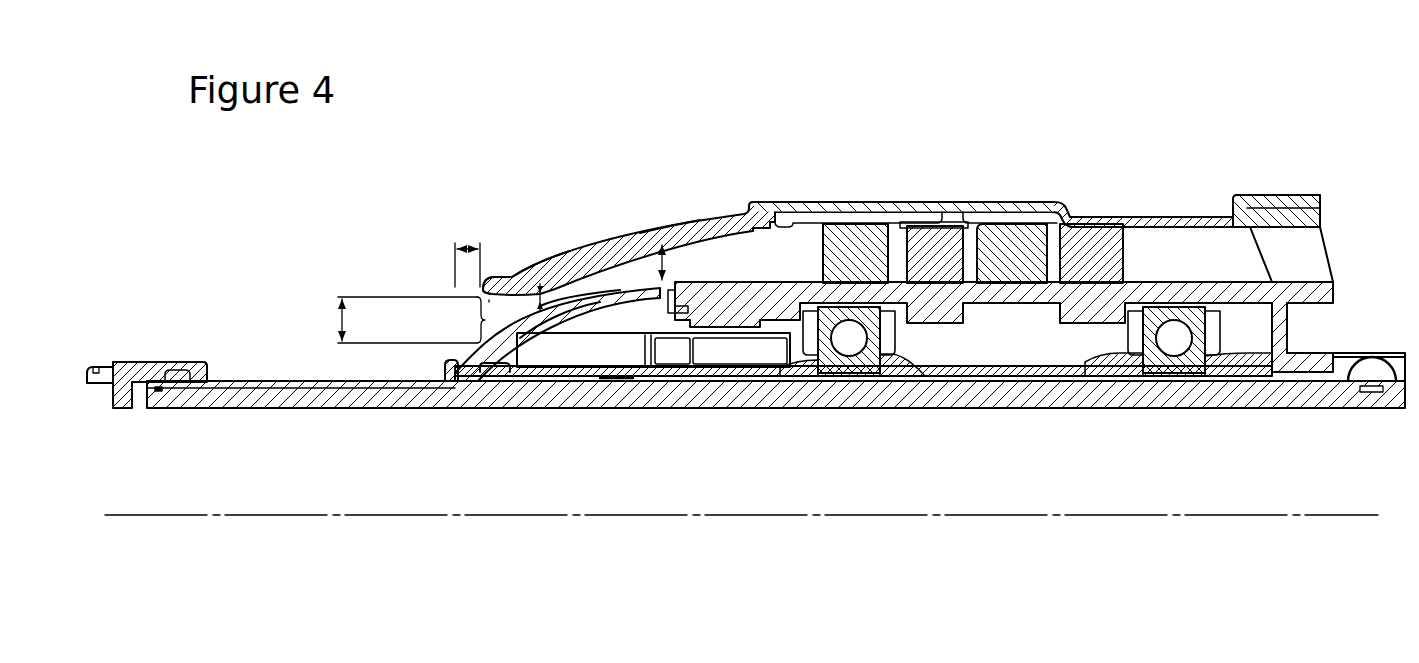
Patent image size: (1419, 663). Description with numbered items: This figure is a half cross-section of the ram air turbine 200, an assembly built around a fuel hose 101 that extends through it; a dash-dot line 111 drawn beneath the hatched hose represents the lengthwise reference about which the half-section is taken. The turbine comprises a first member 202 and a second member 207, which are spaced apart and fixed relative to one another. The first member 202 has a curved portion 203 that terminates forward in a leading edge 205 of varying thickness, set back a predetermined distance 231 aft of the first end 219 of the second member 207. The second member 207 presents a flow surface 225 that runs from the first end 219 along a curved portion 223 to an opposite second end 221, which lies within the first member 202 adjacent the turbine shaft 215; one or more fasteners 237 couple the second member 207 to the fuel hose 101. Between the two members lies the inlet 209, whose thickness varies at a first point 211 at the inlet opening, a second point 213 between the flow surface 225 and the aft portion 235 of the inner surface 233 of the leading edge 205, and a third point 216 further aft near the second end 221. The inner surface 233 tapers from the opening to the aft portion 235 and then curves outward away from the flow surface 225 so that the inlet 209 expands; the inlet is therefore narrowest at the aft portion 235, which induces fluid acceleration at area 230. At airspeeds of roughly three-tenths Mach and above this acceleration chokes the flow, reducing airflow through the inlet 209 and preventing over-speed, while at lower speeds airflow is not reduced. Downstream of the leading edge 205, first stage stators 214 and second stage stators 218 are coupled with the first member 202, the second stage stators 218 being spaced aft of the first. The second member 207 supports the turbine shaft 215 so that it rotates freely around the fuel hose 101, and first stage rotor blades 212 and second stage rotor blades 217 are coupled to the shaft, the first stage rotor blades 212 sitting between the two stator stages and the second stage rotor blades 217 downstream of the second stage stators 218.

The ram air turbine 200 is at (1165, 128).
The fuel hose 101 is at (430, 450).
The axis of rotation 111 is at (188, 514).
The first member 202 is at (660, 212).
The curved portion 203 is at (697, 224).
The leading edge 205 is at (506, 276).
The second member 207 is at (607, 327).
The inlet 209 is at (479, 320).
The first point 211 is at (340, 319).
The first stage rotor blades 212 is at (931, 262).
The second point 213 is at (538, 306).
The first stage stators 214 is at (853, 256).
The turbine shaft 215 is at (741, 287).
The third point 216 is at (670, 254).
The second stage rotor blades 217 is at (1093, 266).
The second stage stators 218 is at (1006, 254).
The first end 219 is at (467, 355).
The second end 221 is at (668, 287).
The curved portion 223 is at (537, 330).
The flow surface 225 is at (583, 295).
The area 230 is at (553, 297).
The predetermined distance 231 is at (473, 246).
The inner surface 233 is at (489, 302).
The aft portion 235 is at (529, 278).
The fasteners 237 is at (849, 345).